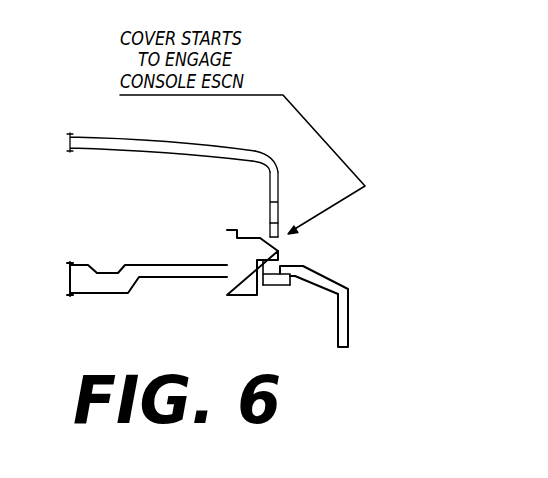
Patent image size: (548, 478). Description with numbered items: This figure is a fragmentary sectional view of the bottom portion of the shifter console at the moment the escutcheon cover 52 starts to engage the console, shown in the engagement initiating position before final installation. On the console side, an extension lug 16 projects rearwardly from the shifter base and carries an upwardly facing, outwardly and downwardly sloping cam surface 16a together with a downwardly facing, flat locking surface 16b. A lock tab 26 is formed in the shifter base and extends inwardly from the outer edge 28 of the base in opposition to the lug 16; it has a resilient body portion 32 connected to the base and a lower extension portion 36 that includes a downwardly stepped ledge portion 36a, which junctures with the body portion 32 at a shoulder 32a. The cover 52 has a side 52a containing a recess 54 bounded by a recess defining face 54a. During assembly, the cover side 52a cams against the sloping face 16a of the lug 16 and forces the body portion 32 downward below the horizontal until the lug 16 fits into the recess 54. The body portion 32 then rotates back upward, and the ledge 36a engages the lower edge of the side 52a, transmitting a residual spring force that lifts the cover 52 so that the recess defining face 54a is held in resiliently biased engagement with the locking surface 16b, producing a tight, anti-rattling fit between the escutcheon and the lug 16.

The escutcheon cover 52 is at (117, 140).
The cover side 52a is at (258, 158).
The recess 54 is at (281, 206).
The recess defining face 54a is at (271, 221).
The extension lug 16 is at (267, 248).
The cam surface 16a is at (282, 243).
The locking surface 16b is at (258, 264).
The lock tab 26 is at (333, 278).
The outer edge 28 is at (351, 292).
The body portion 32 is at (298, 281).
The shoulder 32a is at (284, 265).
The lower extension portion 36 is at (267, 288).
The stepped ledge portion 36a is at (276, 291).